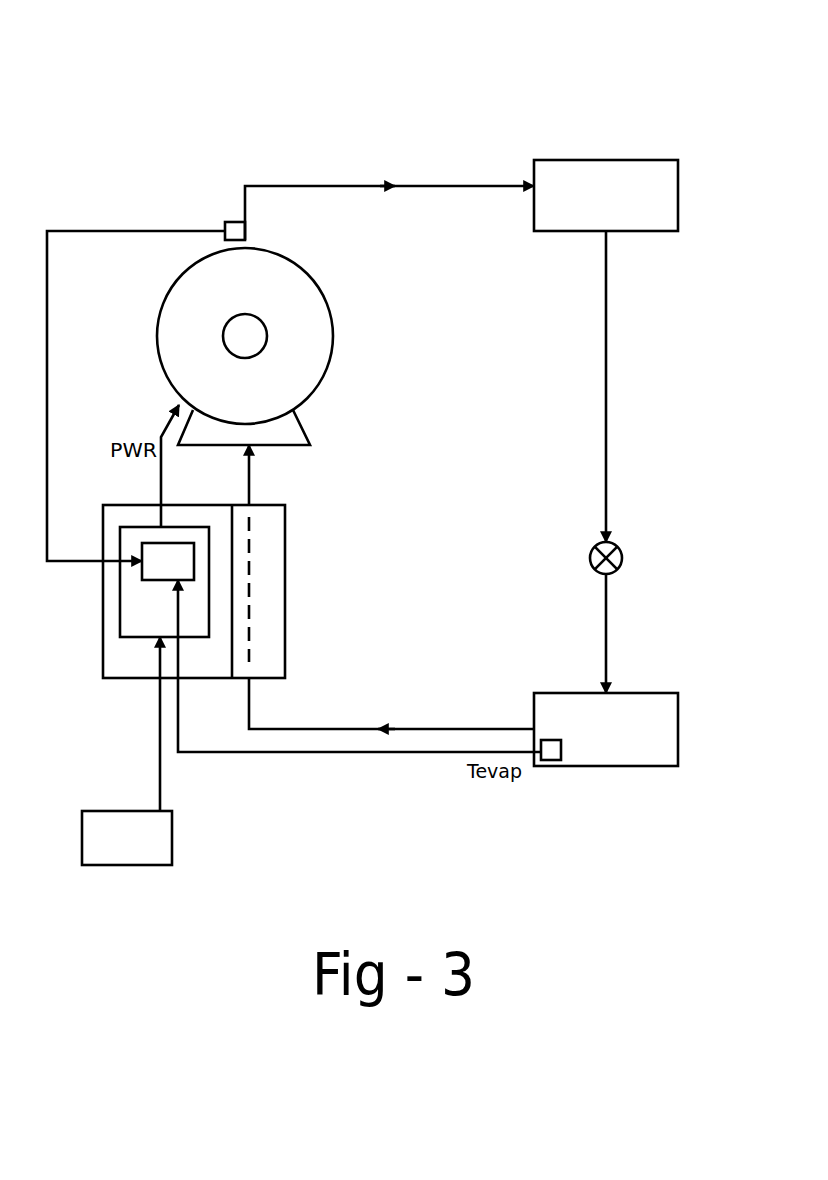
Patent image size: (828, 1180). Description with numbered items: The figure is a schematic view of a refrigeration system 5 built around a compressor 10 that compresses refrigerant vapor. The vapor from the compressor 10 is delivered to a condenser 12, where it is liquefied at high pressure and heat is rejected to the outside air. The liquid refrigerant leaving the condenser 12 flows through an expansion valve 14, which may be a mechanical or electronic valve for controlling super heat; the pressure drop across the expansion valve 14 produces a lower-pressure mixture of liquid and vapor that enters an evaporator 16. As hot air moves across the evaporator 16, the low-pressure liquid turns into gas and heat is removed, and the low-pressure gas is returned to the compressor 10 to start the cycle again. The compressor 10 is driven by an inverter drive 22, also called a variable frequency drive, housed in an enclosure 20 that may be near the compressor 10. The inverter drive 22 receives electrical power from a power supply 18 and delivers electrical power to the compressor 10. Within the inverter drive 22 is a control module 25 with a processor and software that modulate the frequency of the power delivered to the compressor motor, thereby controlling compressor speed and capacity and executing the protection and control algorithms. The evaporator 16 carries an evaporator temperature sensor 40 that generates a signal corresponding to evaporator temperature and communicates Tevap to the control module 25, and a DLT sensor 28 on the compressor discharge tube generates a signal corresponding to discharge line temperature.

The refrigeration system 5 is at (229, 64).
The compressor 10 is at (333, 330).
The condenser 12 is at (592, 160).
The expansion valve 14 is at (620, 545).
The evaporator 16 is at (648, 693).
The power supply 18 is at (172, 847).
The enclosure 20 is at (122, 679).
The inverter drive 22 is at (120, 618).
The control module 25 is at (158, 582).
The DLT sensor 28 is at (235, 222).
The evaporator temperature sensor 40 is at (552, 761).